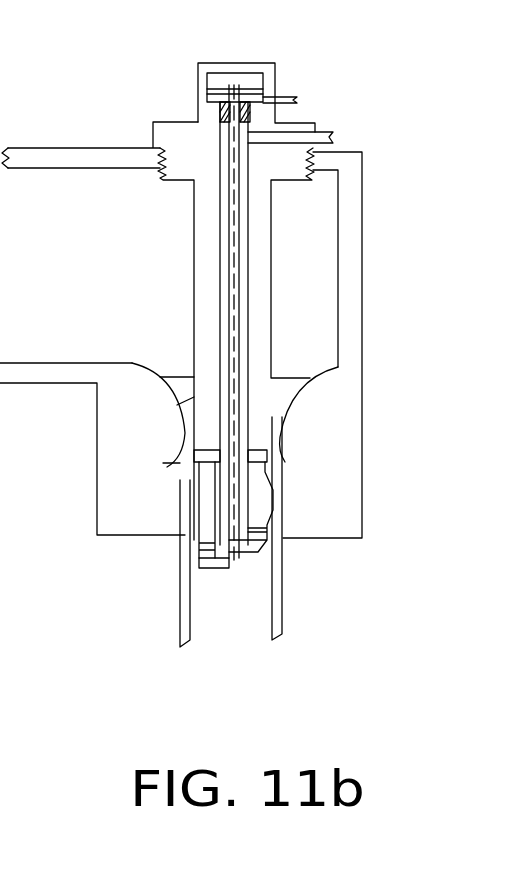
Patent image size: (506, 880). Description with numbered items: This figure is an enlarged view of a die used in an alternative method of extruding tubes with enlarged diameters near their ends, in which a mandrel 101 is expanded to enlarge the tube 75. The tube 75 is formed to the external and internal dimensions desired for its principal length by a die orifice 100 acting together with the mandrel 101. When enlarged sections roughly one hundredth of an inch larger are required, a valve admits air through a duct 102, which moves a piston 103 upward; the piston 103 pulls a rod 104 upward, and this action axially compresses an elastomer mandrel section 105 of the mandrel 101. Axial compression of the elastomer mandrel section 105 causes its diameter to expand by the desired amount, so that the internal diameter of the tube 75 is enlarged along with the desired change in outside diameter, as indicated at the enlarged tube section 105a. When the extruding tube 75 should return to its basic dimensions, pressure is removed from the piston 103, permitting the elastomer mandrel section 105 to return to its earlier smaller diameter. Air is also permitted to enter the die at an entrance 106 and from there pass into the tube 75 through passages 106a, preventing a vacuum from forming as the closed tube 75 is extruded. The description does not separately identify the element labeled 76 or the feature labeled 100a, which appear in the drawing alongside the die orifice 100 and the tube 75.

The tube 75 is at (180, 607).
The second tube 76 is at (283, 610).
The die orifice 100 is at (285, 462).
The seal body 100a is at (199, 530).
The mandrel 101 is at (167, 467).
The duct 102 is at (297, 98).
The piston 103 is at (222, 87).
The rod 104 is at (237, 322).
The elastomer mandrel section 105 is at (199, 558).
The enlarged tube section 105a is at (270, 523).
The entrance 106 is at (333, 137).
The passages 106a is at (267, 453).